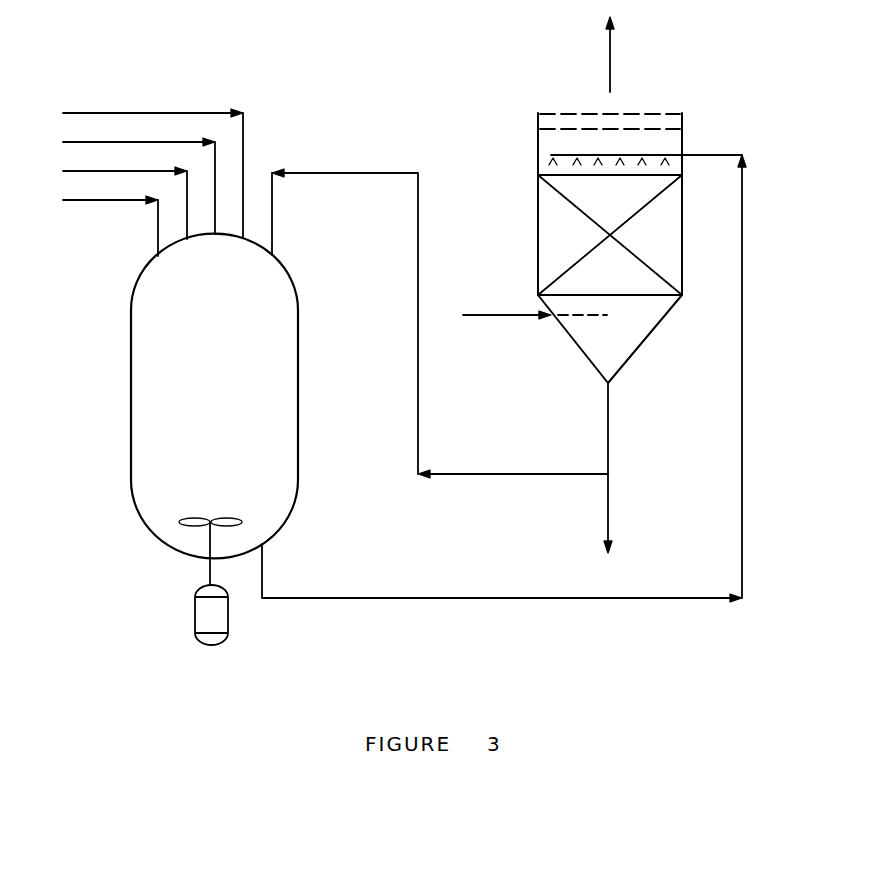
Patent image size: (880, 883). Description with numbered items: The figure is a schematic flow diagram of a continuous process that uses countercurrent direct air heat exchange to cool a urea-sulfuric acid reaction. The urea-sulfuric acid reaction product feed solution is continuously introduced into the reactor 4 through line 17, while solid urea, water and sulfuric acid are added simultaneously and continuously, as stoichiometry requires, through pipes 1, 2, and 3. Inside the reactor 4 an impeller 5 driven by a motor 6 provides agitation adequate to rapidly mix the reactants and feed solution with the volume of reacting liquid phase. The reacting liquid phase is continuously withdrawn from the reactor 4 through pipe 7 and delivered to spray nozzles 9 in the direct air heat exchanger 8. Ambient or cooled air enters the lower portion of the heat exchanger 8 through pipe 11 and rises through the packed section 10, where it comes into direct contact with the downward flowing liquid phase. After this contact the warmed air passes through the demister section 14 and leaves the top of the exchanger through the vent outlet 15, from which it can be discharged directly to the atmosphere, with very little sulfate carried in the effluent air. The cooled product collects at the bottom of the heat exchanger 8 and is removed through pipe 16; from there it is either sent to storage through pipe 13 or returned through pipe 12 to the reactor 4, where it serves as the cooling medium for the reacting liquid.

The pipe 1 is at (129, 182).
The pipe 2 is at (113, 199).
The pipe 3 is at (99, 222).
The reactor 4 is at (131, 361).
The impeller 5 is at (222, 516).
The motor 6 is at (195, 615).
The pipe 7 is at (742, 333).
The direct air heat exchanger 8 is at (526, 142).
The spray nozzles 9 is at (613, 156).
The packed section 10 is at (538, 225).
The pipe 11 is at (501, 318).
The pipe 12 is at (314, 173).
The pipe 13 is at (608, 527).
The demister section 14 is at (662, 122).
The vent gas outlet 15 is at (610, 57).
The pipe 16 is at (608, 423).
The line 17 is at (136, 170).